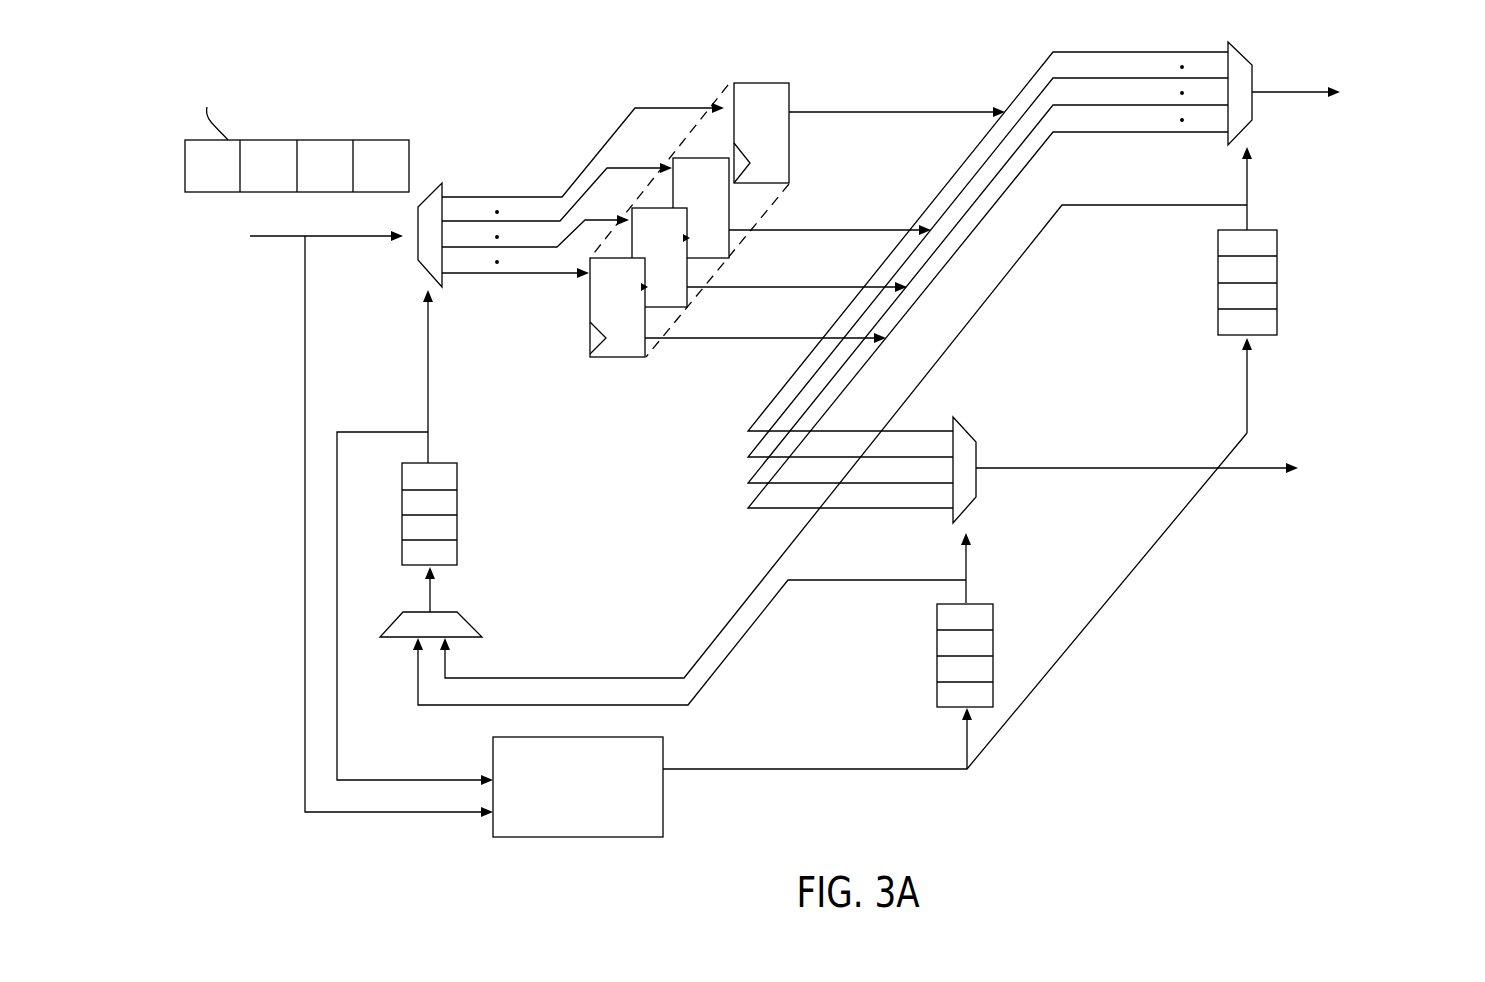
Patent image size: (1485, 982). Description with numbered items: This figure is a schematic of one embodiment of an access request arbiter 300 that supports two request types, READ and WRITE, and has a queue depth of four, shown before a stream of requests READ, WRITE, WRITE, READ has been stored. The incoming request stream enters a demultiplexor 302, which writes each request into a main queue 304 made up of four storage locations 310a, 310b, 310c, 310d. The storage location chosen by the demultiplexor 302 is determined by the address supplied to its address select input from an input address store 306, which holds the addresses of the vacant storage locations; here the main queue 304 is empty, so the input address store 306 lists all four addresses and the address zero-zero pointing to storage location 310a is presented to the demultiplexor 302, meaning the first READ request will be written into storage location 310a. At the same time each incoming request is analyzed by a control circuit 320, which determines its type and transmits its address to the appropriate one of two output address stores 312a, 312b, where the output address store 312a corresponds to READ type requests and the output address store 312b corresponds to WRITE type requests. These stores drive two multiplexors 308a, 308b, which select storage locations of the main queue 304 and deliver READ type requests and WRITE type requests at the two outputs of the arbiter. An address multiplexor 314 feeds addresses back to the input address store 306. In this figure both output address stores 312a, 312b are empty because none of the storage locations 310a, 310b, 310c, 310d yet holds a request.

The access request arbiter 300 is at (1077, 847).
The demultiplexor 302 is at (436, 186).
The main queue 304 is at (815, 50).
The input address store 306 is at (450, 463).
The multiplexor 308a is at (1247, 62).
The multiplexor 308b is at (973, 503).
The storage location 310a is at (773, 185).
The storage location 310b is at (731, 237).
The storage location 310c is at (690, 296).
The storage location 310d is at (632, 358).
The output address store 312a is at (1256, 230).
The output address store 312b is at (986, 603).
The address multiplexor 314 is at (465, 615).
The control circuit 320 is at (578, 787).